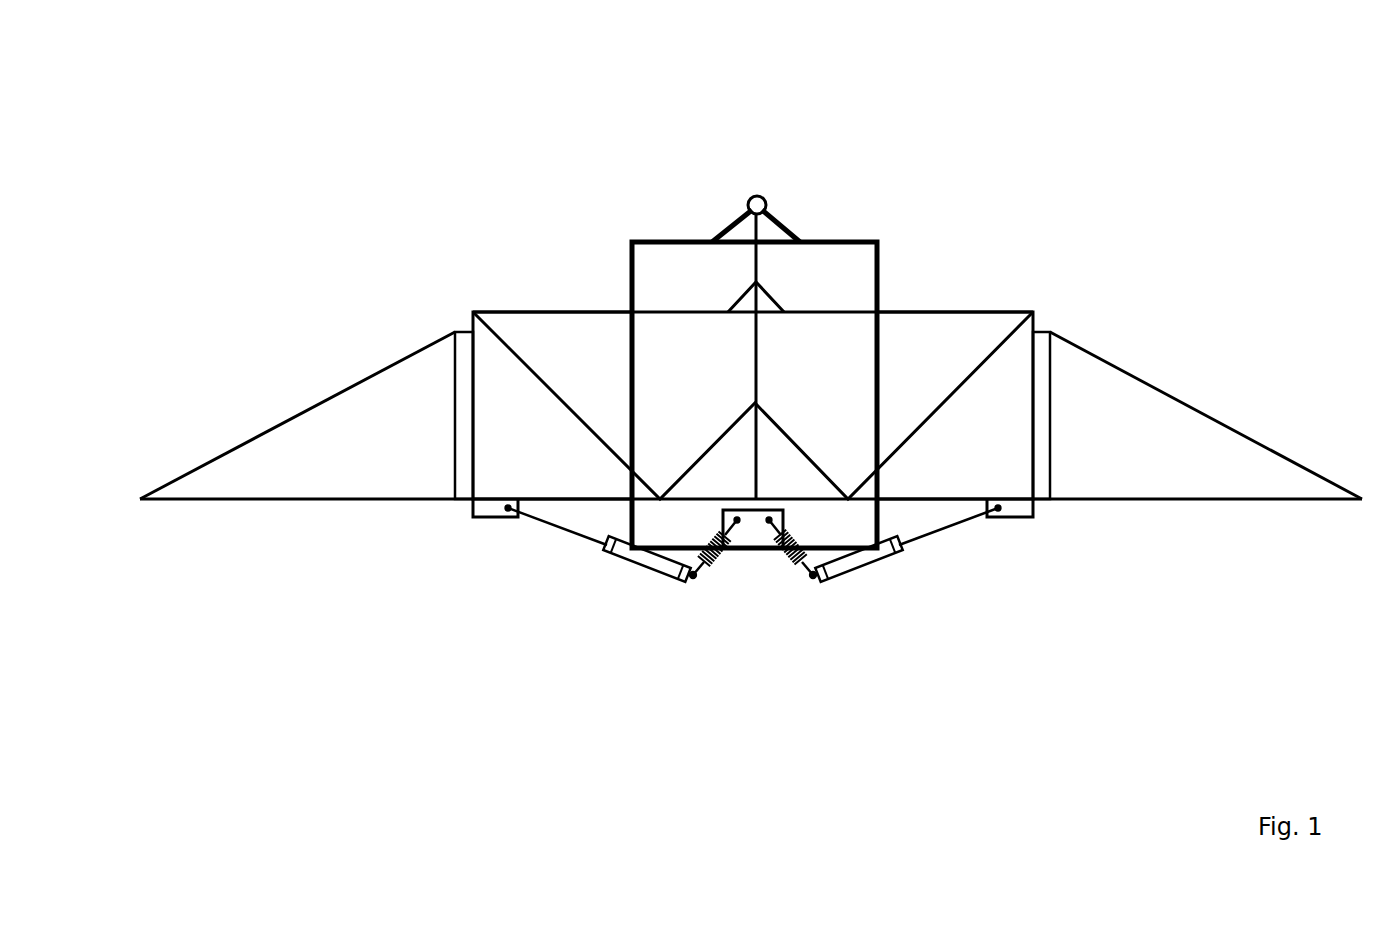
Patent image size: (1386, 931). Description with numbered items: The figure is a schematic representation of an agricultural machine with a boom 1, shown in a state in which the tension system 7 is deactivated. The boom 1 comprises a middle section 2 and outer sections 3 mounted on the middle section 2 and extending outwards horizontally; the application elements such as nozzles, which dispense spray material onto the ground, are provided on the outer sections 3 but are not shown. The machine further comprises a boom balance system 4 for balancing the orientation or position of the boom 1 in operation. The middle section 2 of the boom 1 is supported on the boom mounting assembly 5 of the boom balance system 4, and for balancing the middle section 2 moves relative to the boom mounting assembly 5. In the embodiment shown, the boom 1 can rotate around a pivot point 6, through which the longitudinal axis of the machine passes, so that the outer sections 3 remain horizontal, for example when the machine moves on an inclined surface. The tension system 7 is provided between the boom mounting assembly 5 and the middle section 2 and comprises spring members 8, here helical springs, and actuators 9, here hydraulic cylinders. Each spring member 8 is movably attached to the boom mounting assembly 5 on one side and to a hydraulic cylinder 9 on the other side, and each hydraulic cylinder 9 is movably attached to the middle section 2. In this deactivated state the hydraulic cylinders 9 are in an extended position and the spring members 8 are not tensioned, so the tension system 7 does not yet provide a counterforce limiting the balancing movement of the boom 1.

The boom 1 is at (490, 310).
The middle section 2 is at (553, 310).
The outer sections 3 is at (315, 500).
The boom balance system 4 is at (663, 242).
The boom mounting assembly 5 is at (858, 242).
The pivot point 6 is at (748, 197).
The tension system 7 is at (618, 560).
The spring members 8 is at (723, 560).
The actuators 9 is at (640, 557).